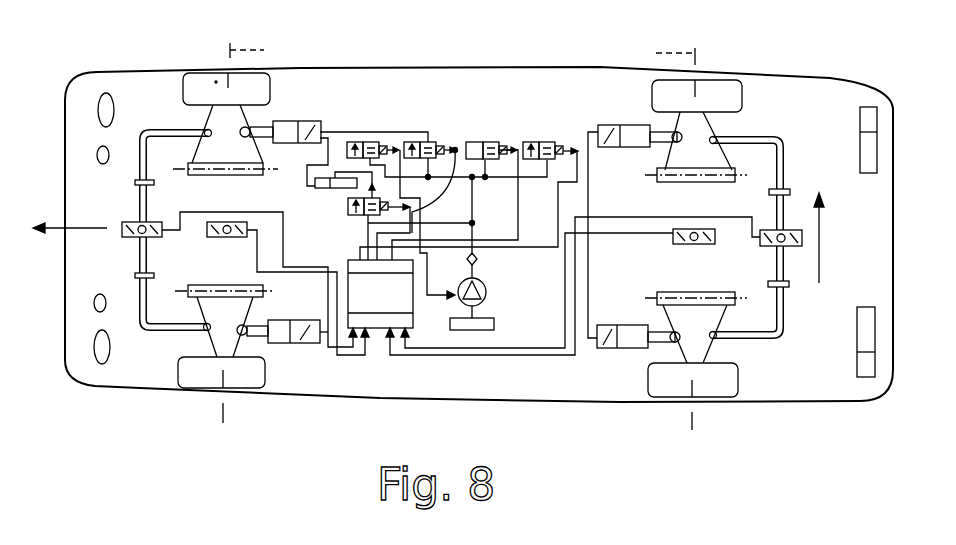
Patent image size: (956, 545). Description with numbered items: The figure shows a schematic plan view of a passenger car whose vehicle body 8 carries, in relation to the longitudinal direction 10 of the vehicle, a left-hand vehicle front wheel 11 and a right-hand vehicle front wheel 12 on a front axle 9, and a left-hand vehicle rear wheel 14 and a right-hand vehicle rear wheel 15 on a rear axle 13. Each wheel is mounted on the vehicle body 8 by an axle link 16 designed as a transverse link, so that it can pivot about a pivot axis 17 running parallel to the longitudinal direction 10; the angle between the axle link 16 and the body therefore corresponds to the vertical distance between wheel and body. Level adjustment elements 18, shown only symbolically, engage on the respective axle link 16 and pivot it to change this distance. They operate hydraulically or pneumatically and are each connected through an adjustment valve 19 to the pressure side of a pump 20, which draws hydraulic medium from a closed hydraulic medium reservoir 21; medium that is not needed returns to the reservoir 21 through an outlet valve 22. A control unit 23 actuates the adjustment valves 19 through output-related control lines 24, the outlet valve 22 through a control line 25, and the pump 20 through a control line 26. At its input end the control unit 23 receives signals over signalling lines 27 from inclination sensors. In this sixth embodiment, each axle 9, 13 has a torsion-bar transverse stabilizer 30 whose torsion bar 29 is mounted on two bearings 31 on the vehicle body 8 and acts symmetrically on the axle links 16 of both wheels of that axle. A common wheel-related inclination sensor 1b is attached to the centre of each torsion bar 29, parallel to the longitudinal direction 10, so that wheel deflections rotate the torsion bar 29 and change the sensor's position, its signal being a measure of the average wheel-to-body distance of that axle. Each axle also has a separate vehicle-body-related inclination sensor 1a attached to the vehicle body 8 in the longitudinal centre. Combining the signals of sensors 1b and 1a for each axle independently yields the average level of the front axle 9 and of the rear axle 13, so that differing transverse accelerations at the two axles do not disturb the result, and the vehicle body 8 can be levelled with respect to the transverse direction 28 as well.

The vehicle body 8 is at (585, 403).
The front axle 9 is at (256, 51).
The longitudinal direction of the vehicle 10 is at (83, 224).
The left-hand vehicle front wheel 11 is at (250, 377).
The right-hand vehicle front wheel 12 is at (266, 88).
The rear axle 13 is at (660, 55).
The left-hand vehicle rear wheel 14 is at (732, 380).
The right-hand vehicle rear wheel 15 is at (742, 98).
The axle link 16 is at (228, 153).
The pivot axis 17 is at (190, 170).
The level adjustment element 18 is at (317, 127).
The adjustment valve 19 is at (416, 141).
The pump 20 is at (487, 283).
The hydraulic medium reservoir 21 is at (323, 190).
The outlet valve 22 is at (355, 215).
The control unit 23 is at (396, 306).
The control line 24 is at (473, 198).
The control line 25 is at (455, 148).
The control line 26 is at (465, 262).
The signalling line 27 is at (247, 213).
The transverse direction of the vehicle 28 is at (822, 252).
The torsion bar 29 is at (140, 250).
The torsion-bar transverse stabilizer 30 is at (152, 128).
The bearing 31 is at (135, 183).
The vehicle-body-related inclination sensor 1a is at (218, 240).
The wheel-related inclination sensor 1b is at (148, 237).